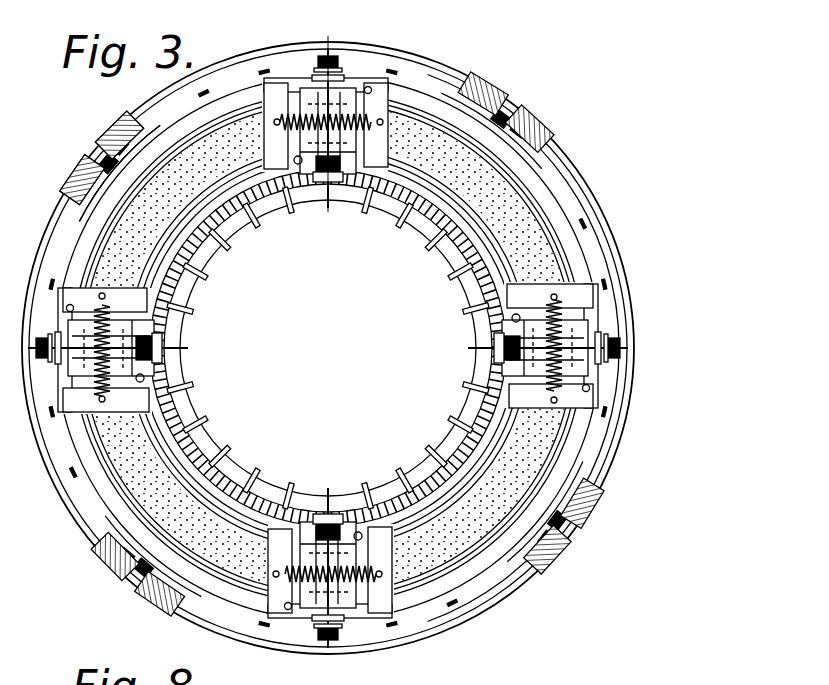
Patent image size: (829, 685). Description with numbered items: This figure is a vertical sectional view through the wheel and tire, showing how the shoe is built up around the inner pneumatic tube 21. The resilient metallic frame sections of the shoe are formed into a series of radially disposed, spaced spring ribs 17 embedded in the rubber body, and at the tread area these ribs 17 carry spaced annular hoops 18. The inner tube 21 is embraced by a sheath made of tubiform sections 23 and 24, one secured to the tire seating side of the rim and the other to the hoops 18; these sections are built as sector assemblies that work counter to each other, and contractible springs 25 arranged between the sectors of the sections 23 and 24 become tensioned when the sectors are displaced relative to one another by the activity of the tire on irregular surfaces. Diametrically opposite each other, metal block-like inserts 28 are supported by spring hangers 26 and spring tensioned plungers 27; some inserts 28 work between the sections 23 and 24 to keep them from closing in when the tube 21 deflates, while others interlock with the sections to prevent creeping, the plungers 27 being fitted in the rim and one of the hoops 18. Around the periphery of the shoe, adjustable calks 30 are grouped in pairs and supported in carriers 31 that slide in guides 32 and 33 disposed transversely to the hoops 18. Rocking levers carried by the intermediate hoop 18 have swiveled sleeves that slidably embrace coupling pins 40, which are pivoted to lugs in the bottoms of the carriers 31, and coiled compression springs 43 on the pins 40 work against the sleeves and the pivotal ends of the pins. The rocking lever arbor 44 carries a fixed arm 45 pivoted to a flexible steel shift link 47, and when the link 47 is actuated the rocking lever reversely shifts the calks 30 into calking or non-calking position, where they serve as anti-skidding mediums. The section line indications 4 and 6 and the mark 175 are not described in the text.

The section line 4- 4 is at (419, 237).
The section line 6- 6 is at (320, 213).
The spring ribs 17 is at (598, 275).
The annular hoops 18 is at (575, 192).
The inner pneumatic tube 21 is at (208, 286).
The tubiform sheath section 23 is at (268, 125).
The tubiform sheath section 24 is at (362, 150).
The contractible springs 25 is at (268, 128).
The spring hangers 26 is at (378, 122).
The spring tensioned plungers 27 is at (339, 62).
The block-like inserts 28 is at (370, 88).
The adjustable calks 30 is at (95, 158).
The carriers 31 is at (455, 100).
The guide 32 is at (560, 127).
The guide 33 is at (440, 98).
The coupling pins 40 is at (78, 183).
The coiled compression springs 43 is at (120, 128).
The rocking lever arbor 44 is at (125, 212).
The arm 45 is at (148, 173).
The flexible steel shift link 47 is at (160, 157).
The lug 175 is at (602, 412).